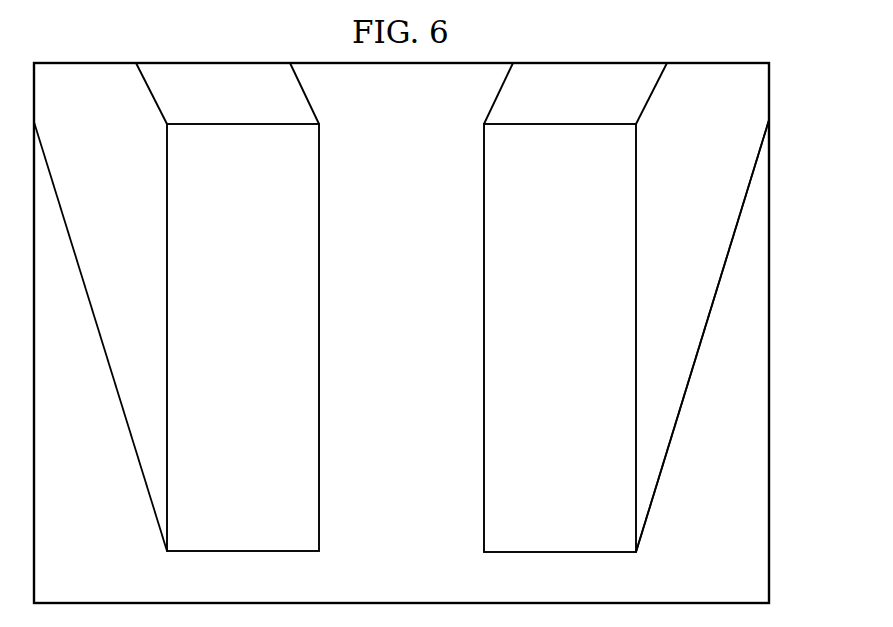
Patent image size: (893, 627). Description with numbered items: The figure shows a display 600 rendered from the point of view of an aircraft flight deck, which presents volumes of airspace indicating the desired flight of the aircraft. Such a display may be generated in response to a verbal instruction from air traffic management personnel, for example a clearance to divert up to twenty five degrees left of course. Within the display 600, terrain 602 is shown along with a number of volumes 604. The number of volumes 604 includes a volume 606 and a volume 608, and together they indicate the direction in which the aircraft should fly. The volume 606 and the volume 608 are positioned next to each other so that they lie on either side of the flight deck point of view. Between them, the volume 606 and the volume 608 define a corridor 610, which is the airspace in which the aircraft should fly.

The display 600 is at (598, 61).
The terrain 602 is at (122, 574).
The number of volumes 604 is at (667, 532).
The volume 606 is at (580, 353).
The volume 608 is at (263, 353).
The corridor 610 is at (401, 502).